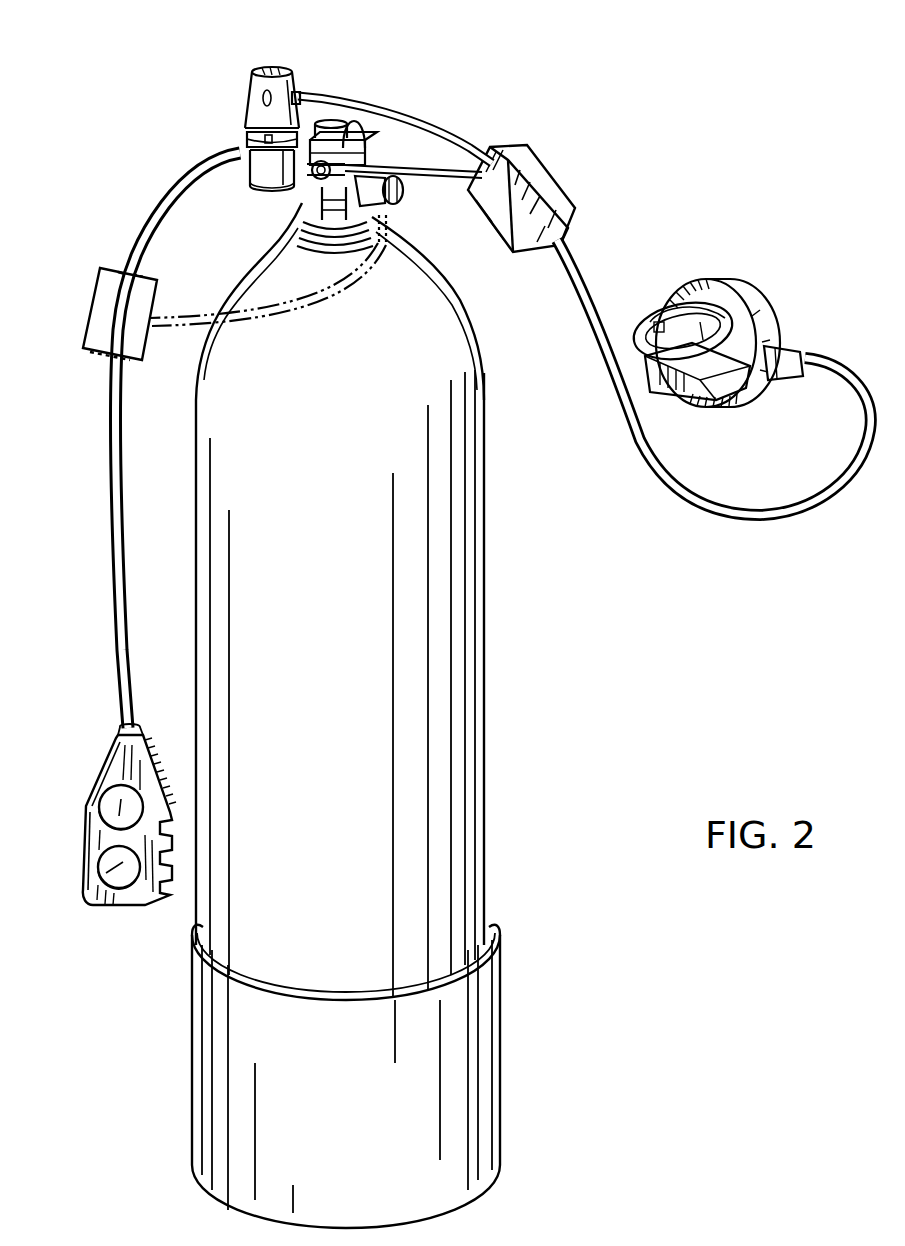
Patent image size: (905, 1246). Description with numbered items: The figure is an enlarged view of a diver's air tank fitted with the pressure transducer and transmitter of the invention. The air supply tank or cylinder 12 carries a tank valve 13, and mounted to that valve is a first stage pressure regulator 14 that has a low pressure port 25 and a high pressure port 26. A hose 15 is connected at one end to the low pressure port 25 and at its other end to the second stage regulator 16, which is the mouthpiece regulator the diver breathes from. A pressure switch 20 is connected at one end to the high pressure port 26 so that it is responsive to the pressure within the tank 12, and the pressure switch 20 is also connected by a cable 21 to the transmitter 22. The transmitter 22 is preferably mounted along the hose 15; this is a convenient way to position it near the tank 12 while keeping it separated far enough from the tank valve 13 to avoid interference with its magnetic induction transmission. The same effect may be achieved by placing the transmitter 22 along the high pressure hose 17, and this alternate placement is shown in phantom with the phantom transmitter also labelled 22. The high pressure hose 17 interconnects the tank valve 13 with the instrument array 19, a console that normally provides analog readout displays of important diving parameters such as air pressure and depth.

The air supply tank 12 is at (346, 715).
The tank valve 13 is at (343, 165).
The first stage pressure regulator 14 is at (274, 95).
The hose 15 is at (772, 522).
The second stage regulator 16 is at (738, 283).
The high pressure hose 17 is at (112, 472).
The instrument array 19 is at (85, 820).
The pressure switch 20 is at (312, 205).
The cable 21 is at (432, 178).
The transmitter 22 is at (543, 165).
The low pressure port 25 is at (281, 70).
The high pressure port 26 is at (255, 190).